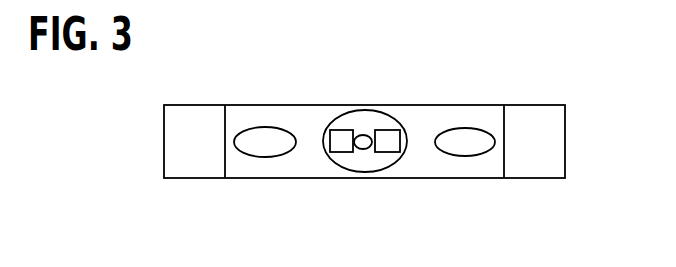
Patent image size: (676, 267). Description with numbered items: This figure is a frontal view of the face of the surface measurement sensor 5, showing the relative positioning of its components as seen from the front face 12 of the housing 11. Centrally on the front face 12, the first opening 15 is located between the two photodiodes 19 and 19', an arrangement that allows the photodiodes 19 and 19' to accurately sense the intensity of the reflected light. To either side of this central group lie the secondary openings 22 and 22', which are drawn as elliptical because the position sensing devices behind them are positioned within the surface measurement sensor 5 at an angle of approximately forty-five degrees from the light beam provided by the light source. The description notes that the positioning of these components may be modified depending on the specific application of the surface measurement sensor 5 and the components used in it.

The surface measurement sensor 5 is at (512, 66).
The housing 11 is at (188, 100).
The front face 12 is at (263, 116).
The first opening 15 is at (363, 160).
The photodiode 19 is at (410, 110).
The photodiode 19' is at (325, 110).
The secondary opening 22 is at (477, 170).
The secondary opening 22' is at (245, 181).